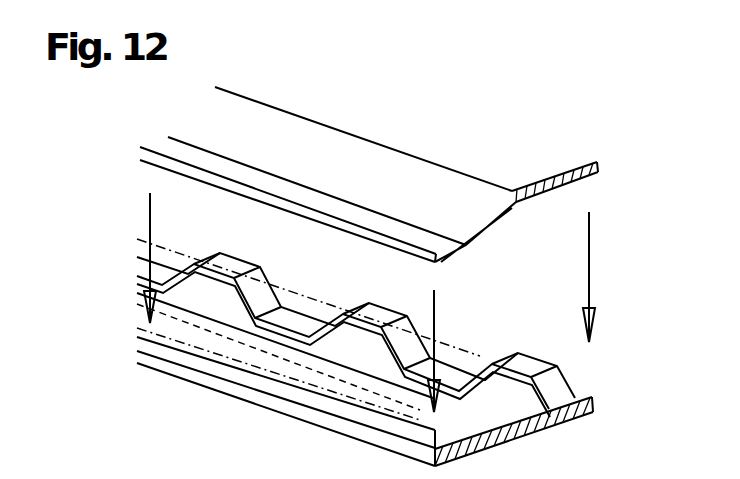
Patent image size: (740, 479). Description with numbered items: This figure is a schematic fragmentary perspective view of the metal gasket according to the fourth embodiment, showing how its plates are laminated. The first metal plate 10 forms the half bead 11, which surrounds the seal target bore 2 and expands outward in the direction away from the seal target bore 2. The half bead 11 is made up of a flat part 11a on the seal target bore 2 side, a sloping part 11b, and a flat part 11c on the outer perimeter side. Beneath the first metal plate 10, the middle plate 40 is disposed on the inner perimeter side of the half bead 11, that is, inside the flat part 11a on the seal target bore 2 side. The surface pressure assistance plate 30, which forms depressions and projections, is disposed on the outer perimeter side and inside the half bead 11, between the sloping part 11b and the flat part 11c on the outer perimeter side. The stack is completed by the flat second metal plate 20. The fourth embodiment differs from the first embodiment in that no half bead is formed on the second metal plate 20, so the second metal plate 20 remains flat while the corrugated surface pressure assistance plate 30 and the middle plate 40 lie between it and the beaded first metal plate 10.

The seal target bore 2 is at (182, 444).
The first metal plate 10 is at (356, 150).
The half bead 11 is at (449, 203).
The flat part 11a is at (170, 150).
The sloping part 11b is at (250, 128).
The flat part 11c is at (318, 105).
The second metal plate 20 is at (595, 403).
The surface pressure assistance plate 30 is at (560, 393).
The middle plate 40 is at (137, 349).